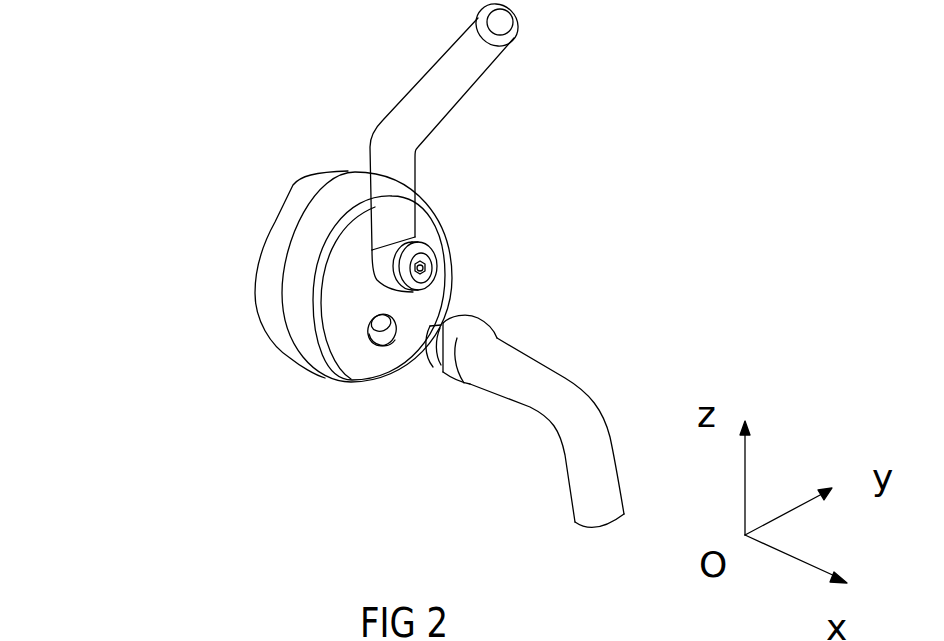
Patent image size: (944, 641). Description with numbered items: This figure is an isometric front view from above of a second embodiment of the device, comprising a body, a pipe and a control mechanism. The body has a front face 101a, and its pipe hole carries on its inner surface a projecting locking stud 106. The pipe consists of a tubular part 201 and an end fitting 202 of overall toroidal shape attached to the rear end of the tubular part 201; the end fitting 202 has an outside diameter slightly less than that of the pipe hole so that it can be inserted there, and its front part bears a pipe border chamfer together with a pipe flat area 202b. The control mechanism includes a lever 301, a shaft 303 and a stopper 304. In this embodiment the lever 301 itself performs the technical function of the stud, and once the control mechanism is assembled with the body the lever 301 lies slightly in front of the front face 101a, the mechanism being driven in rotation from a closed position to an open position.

The lever 301 is at (462, 82).
The shaft 303 is at (400, 249).
The pipe flat area 202b is at (466, 318).
The tubular part 201 is at (512, 363).
The stopper 304 is at (290, 184).
The projecting locking stud 106 is at (368, 320).
The front face 101a is at (378, 363).
The end fitting 202 is at (437, 355).